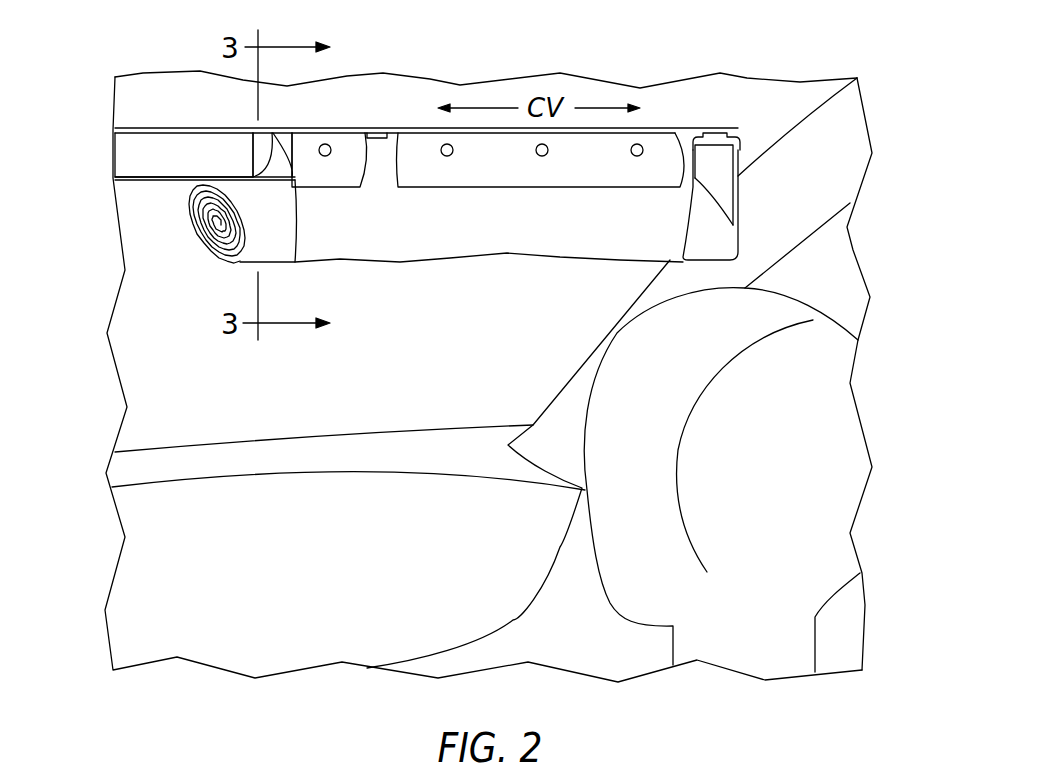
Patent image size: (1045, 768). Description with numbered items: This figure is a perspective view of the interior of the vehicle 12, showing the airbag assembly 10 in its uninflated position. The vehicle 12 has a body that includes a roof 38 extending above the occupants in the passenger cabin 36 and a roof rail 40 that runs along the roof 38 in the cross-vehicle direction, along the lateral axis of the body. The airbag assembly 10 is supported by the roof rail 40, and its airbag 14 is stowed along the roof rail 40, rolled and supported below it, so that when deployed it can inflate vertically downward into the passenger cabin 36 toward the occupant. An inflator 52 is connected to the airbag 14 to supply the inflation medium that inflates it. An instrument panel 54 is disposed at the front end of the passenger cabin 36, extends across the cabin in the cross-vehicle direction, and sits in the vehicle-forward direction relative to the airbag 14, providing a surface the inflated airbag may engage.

The airbag assembly 10 is at (463, 64).
The vehicle 12 is at (812, 167).
The airbag 14 is at (217, 257).
The passenger cabin 36 is at (168, 357).
The roof 38 is at (150, 180).
The roof rail 40 is at (678, 130).
The inflator 52 is at (168, 152).
The instrument panel 54 is at (355, 495).